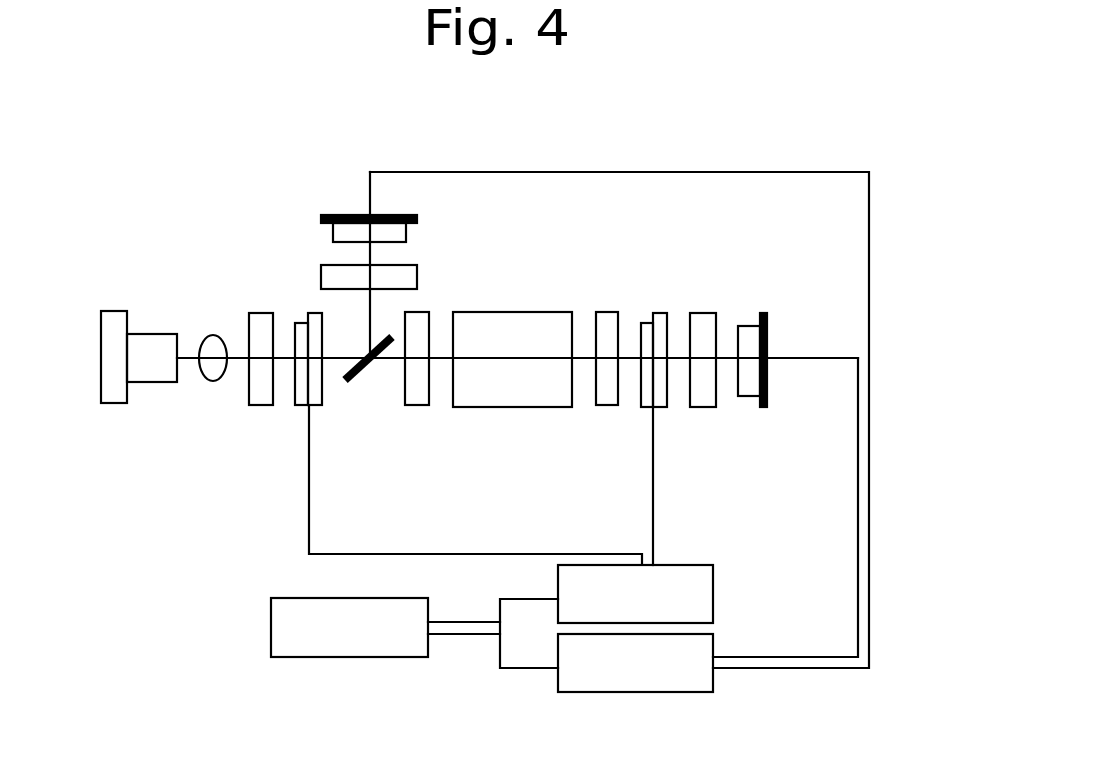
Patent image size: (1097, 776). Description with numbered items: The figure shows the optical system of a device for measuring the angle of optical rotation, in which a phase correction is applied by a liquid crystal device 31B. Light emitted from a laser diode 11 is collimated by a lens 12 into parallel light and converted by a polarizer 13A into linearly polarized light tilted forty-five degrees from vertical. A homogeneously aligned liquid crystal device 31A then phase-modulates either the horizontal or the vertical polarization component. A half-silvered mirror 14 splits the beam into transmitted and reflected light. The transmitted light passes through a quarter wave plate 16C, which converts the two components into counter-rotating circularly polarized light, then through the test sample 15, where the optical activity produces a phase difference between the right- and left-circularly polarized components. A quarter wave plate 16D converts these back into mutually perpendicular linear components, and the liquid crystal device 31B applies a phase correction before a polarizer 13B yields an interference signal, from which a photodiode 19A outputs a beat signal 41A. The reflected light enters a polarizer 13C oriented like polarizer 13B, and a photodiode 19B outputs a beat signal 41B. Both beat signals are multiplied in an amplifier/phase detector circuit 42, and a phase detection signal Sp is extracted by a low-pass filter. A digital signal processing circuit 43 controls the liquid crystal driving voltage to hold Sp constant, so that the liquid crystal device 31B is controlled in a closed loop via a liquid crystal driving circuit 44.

The laser diode 11 is at (112, 403).
The lens 12 is at (211, 381).
The polarizer 13A is at (262, 405).
The liquid crystal device 31A is at (309, 313).
The half-silvered mirror 14 is at (340, 383).
The quarter wave plate 16C is at (416, 405).
The test sample 15 is at (510, 407).
The quarter wave plate 16D is at (607, 405).
The liquid crystal device 31B is at (657, 408).
The polarizer 13B is at (703, 314).
The photodiode 19A is at (761, 314).
The beat signal 41A is at (818, 358).
The beat signal 41B is at (466, 171).
The photodiode 19B is at (344, 214).
The polarizer 13C is at (417, 278).
The digital signal processing circuit 43 is at (367, 657).
The phase detection signal Sp is at (520, 668).
The liquid crystal driving circuit 44 is at (713, 590).
The amplifier/phase detector circuit 42 is at (637, 692).